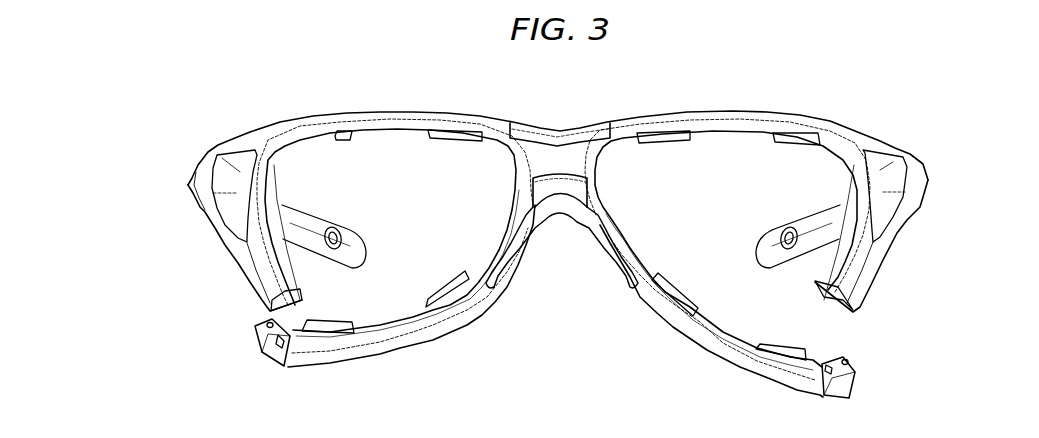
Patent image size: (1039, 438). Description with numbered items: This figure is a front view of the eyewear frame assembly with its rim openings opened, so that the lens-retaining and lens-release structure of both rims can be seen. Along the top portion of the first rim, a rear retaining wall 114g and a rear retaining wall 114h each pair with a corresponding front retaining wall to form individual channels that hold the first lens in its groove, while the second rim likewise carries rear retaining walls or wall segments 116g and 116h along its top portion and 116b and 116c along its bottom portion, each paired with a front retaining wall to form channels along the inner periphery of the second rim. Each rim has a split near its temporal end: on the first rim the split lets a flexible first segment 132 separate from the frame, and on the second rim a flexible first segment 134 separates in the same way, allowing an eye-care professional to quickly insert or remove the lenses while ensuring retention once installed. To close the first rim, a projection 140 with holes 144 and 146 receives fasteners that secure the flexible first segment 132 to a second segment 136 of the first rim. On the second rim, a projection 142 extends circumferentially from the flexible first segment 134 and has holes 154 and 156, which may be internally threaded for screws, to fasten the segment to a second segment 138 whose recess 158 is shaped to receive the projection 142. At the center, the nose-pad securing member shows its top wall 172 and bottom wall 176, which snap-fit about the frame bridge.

The top wall 172 is at (575, 135).
The bottom wall 176 is at (560, 185).
The rear retaining wall 116h is at (335, 140).
The rear retaining wall 116g is at (456, 140).
The rear retaining wall 114g is at (667, 142).
The rear retaining wall 114h is at (797, 143).
The rear retaining wall 116b is at (443, 292).
The rear retaining wall 116c is at (352, 334).
The second segment 138 is at (250, 260).
The recess 158 is at (295, 301).
The second segment 136 is at (872, 252).
The flexible first segment 134 is at (322, 356).
The flexible first segment 132 is at (748, 366).
The projection 142 is at (267, 343).
The hole 154 is at (268, 323).
The hole 156 is at (279, 346).
The projection 140 is at (841, 378).
The hole 144 is at (846, 359).
The hole 146 is at (825, 366).